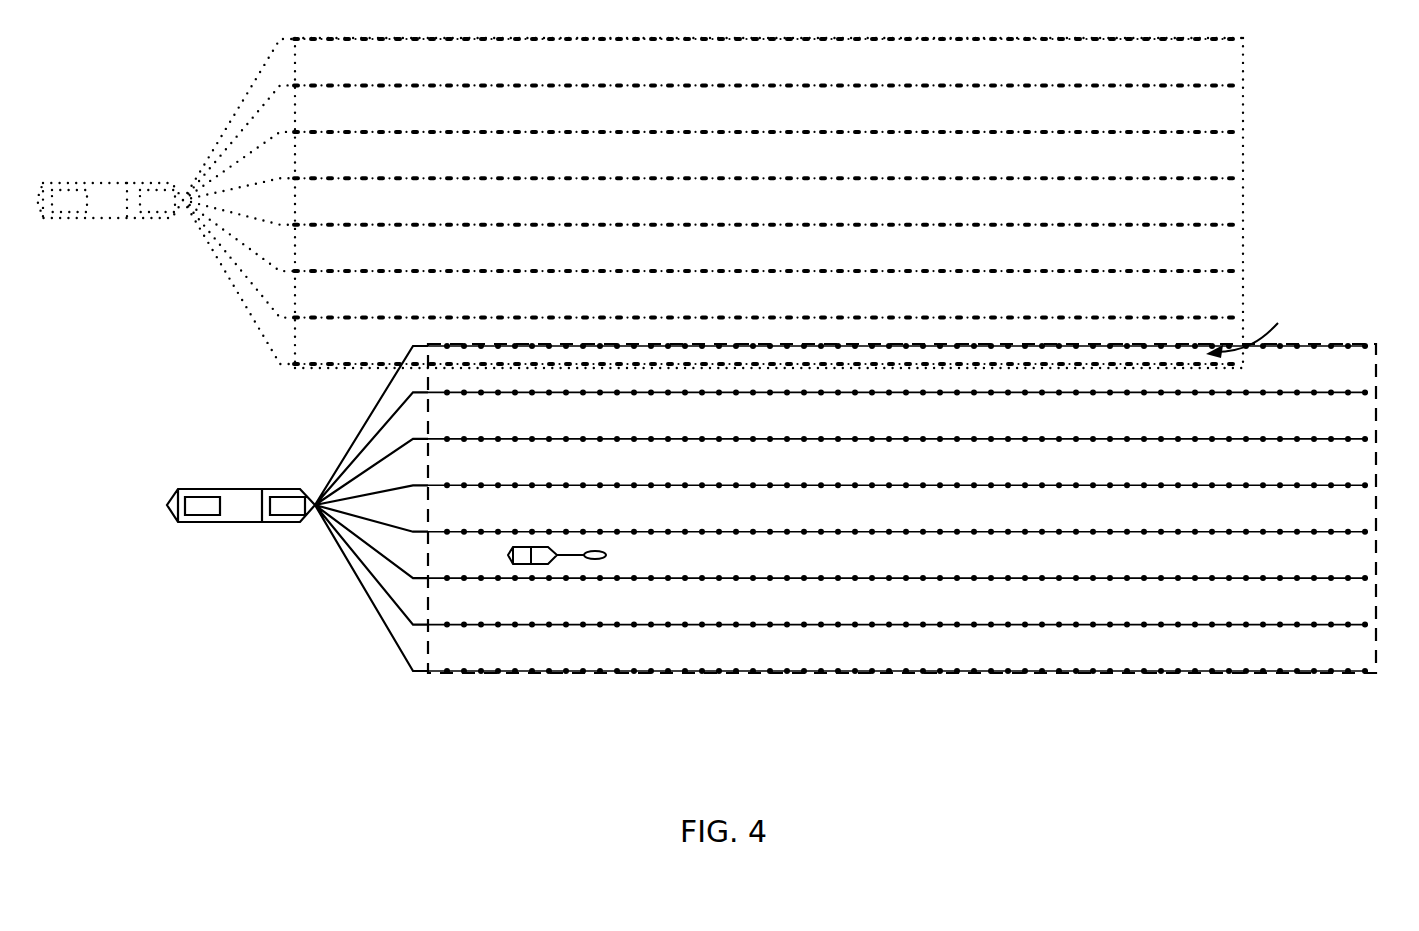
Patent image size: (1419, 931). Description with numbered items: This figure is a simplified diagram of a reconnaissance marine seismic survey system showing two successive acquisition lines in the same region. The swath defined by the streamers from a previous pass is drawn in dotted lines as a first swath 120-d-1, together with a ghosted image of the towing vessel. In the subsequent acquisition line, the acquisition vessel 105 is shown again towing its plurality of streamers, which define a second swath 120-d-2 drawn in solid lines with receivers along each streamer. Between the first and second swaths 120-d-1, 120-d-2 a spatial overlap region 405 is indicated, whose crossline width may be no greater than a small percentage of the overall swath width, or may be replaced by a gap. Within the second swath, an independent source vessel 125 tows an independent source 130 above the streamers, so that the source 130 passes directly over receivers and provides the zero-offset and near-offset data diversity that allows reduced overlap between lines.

The acquisition vessel 105 is at (210, 489).
The first swath 120-d-1 is at (1243, 262).
The second swath 120-d-2 is at (1347, 328).
The independent source vessel 125 is at (508, 555).
The independent source 130 is at (606, 555).
The spatial overlap region 405 is at (1249, 329).